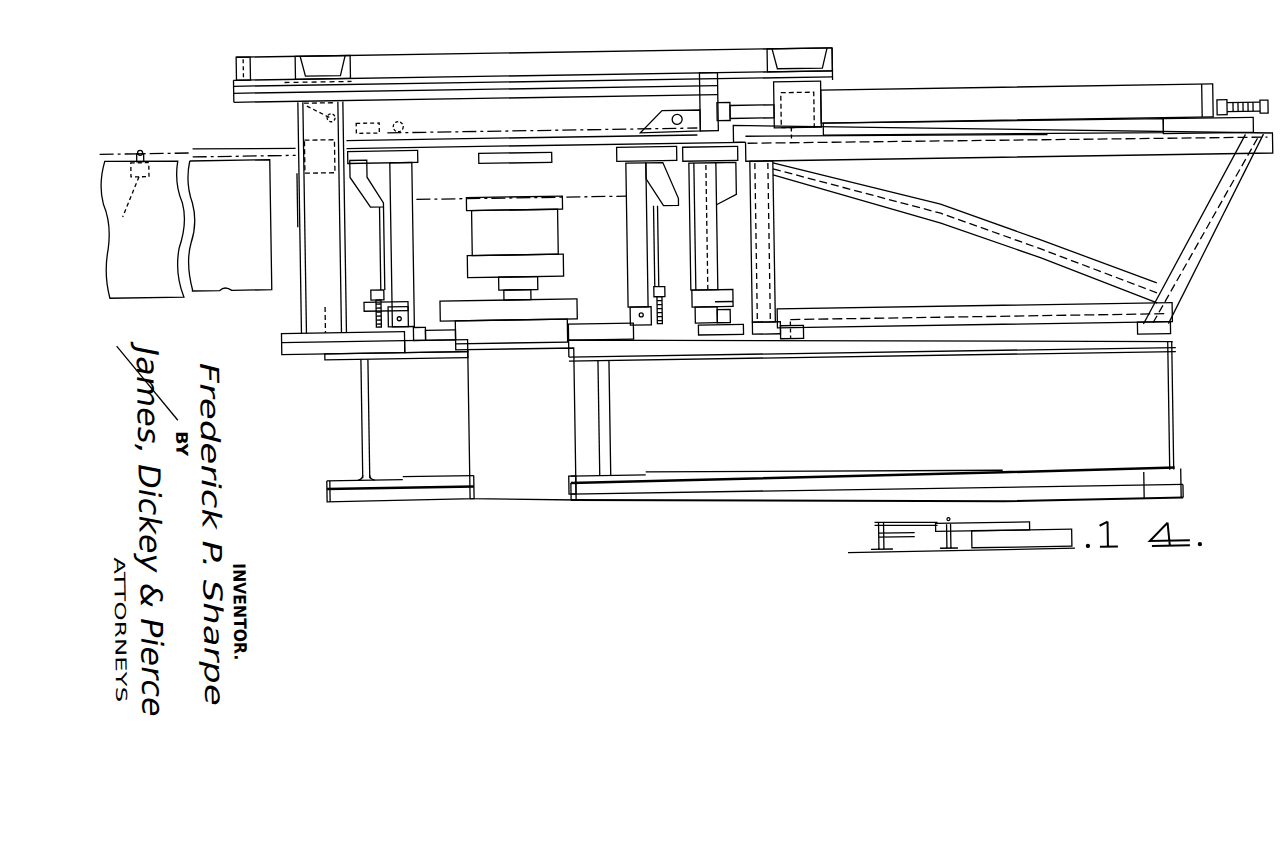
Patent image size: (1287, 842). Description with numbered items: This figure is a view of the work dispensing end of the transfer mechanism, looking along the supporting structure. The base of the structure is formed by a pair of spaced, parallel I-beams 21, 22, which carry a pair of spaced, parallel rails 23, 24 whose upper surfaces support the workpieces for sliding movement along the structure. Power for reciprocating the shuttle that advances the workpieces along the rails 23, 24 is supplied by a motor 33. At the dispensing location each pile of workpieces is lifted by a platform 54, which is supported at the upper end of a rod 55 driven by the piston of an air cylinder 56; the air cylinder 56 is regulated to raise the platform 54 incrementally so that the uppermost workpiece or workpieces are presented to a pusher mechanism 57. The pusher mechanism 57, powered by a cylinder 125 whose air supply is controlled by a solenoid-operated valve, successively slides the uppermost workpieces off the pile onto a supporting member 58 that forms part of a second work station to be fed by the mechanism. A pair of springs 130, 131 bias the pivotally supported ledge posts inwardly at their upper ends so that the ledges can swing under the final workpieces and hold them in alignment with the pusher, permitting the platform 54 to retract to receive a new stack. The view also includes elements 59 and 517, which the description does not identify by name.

The I-beam 21 is at (605, 422).
The I-beam 22 is at (368, 422).
The rail 23 is at (570, 327).
The rail 24 is at (424, 330).
The motor 33 is at (821, 42).
The platform 54 is at (533, 234).
The rod 55 is at (525, 291).
The air cylinder 56 is at (540, 435).
The pusher mechanism 57 is at (652, 119).
The supporting member 58 is at (226, 270).
The link bar 59 is at (350, 122).
The cylinder 125 is at (975, 105).
The spring 130 is at (376, 318).
The spring 131 is at (668, 322).
The workpiece stock 517 is at (131, 209).